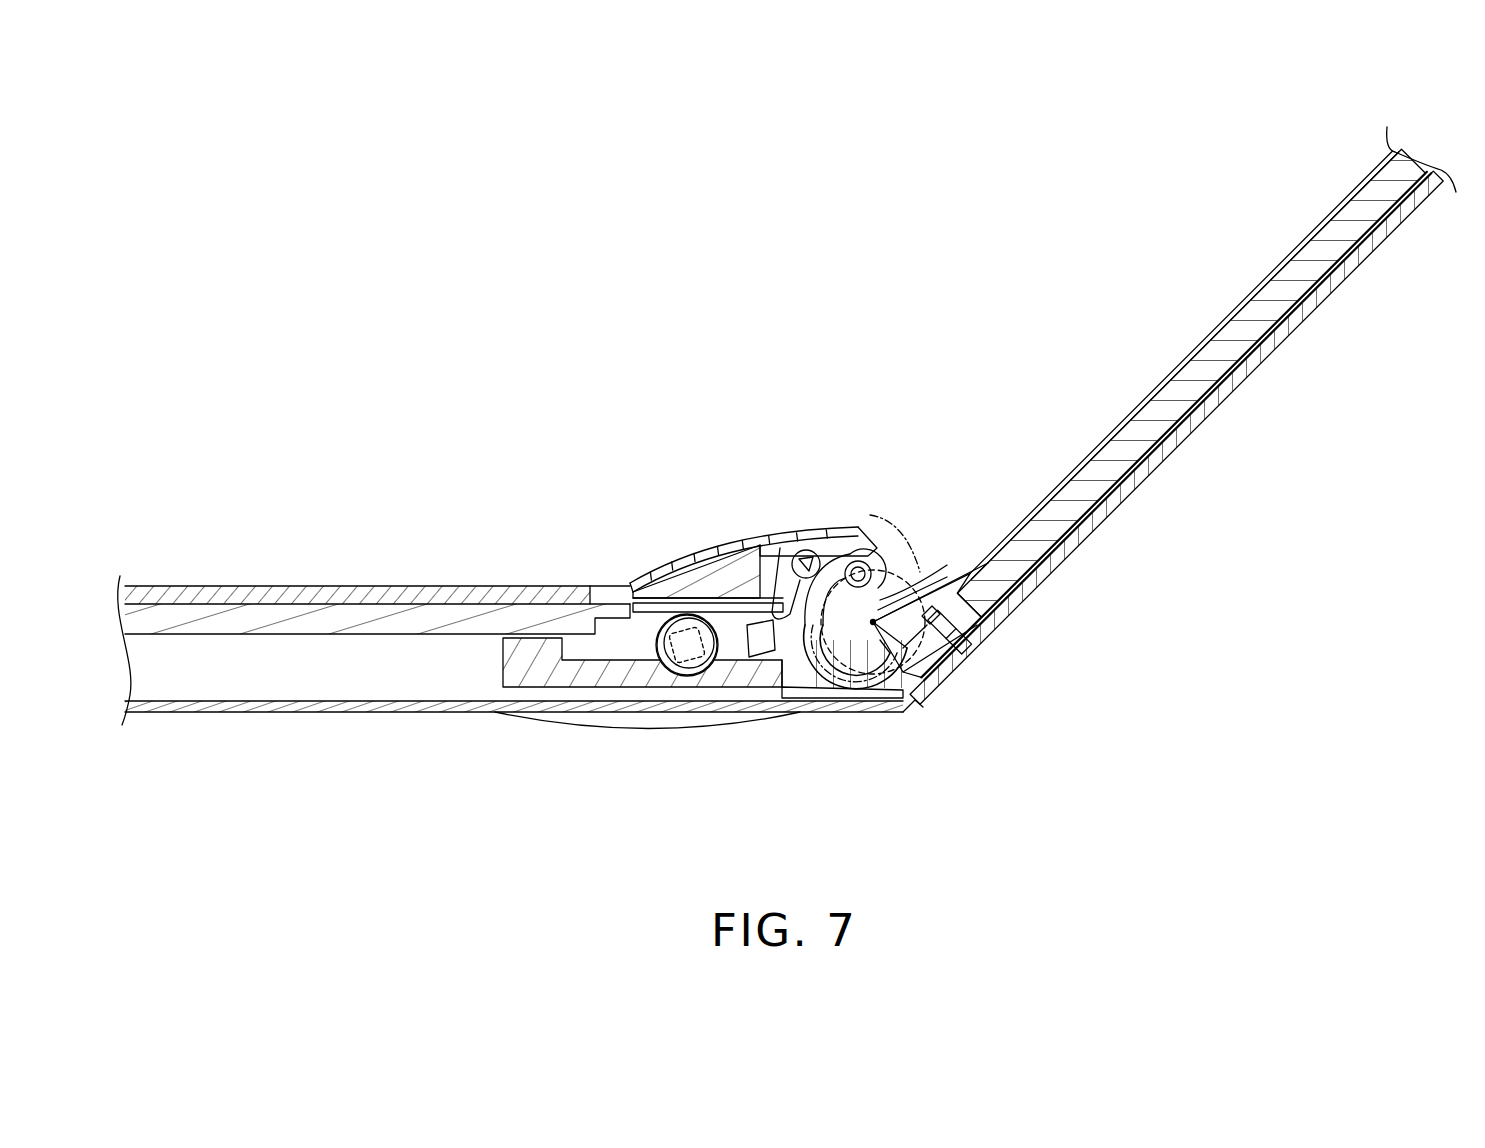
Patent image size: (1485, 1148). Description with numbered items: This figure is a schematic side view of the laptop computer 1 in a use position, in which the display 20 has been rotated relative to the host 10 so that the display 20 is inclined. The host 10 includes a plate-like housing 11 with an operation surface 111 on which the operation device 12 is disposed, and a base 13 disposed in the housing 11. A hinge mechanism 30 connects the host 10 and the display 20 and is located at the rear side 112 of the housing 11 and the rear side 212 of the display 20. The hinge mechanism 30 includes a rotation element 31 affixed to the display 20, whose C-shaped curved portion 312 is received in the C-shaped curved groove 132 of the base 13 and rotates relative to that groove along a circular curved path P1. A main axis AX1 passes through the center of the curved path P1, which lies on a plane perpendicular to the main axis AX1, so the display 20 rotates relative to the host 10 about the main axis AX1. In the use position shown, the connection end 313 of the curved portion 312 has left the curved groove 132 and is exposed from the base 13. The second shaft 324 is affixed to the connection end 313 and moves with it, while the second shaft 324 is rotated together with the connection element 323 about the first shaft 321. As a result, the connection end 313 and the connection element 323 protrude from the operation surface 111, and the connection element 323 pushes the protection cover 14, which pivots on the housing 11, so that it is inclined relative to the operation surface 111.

The laptop computer 1 is at (128, 82).
The host 10 is at (243, 714).
The housing 11 is at (281, 712).
The operation device 12 is at (302, 595).
The operation surface 111 is at (356, 590).
The rear side 112 is at (925, 705).
The base 13 is at (800, 695).
The curved groove 132 is at (866, 690).
The protection cover 14 is at (662, 582).
The display 20 is at (1310, 182).
The rear side 212 is at (933, 673).
The hinge mechanism 30 is at (938, 530).
The rotation element 31 is at (957, 620).
The curved portion 312 is at (1022, 625).
The connection end 313 is at (872, 565).
The first shaft 321 is at (687, 600).
The connection element 323 is at (800, 560).
The second shaft 324 is at (858, 530).
The main axis AX1 is at (875, 615).
The curved path P1 is at (912, 565).